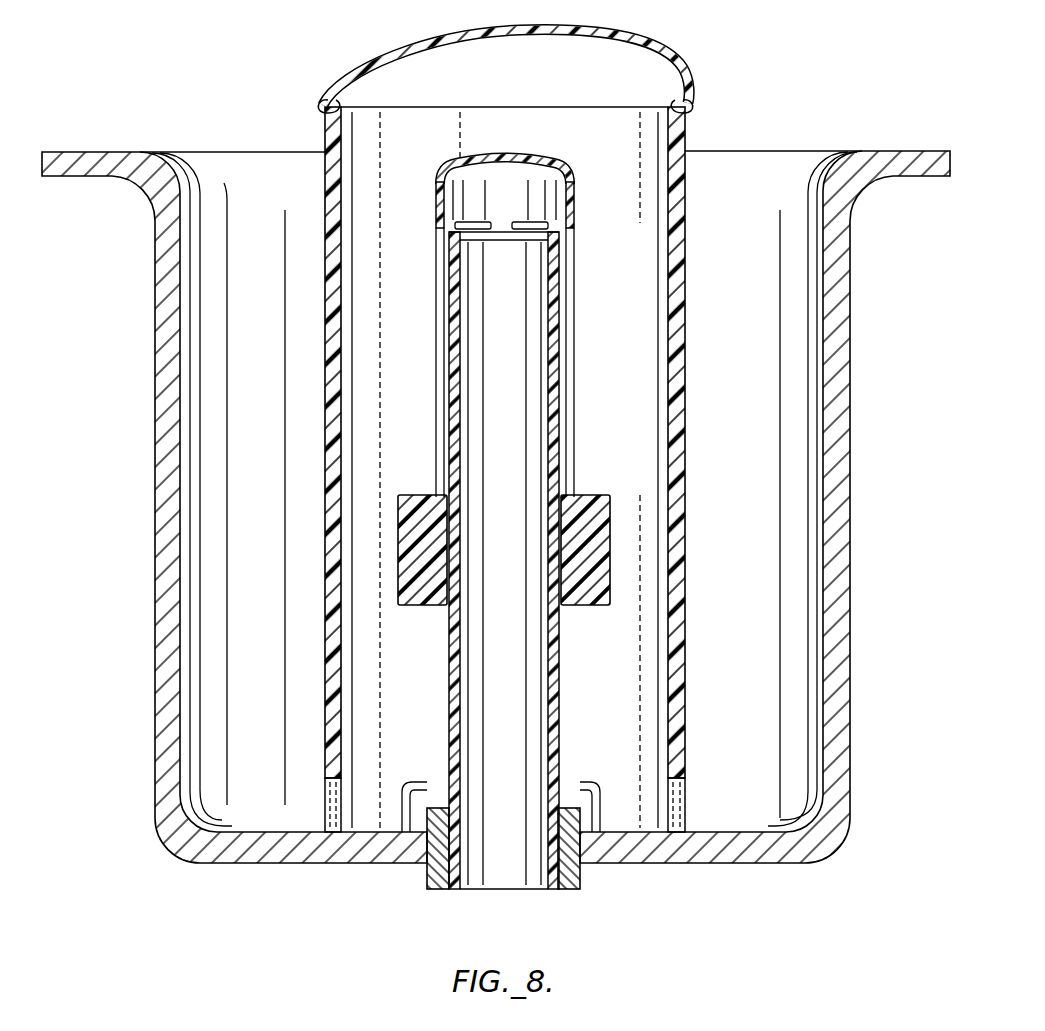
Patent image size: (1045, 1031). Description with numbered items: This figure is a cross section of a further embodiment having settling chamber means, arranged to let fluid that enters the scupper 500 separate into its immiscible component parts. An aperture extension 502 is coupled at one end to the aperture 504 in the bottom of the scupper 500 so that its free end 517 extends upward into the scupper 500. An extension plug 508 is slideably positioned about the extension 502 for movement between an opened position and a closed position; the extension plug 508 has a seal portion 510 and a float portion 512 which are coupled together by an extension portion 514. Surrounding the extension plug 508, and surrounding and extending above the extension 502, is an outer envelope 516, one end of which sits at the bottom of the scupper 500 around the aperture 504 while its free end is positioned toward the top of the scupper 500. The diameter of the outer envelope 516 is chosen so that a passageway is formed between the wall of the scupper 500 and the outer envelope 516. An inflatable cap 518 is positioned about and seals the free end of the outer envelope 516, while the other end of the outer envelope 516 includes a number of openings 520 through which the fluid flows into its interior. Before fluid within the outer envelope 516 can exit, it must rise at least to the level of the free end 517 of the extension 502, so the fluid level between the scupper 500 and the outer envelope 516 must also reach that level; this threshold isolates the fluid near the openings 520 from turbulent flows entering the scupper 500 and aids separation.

The scupper 500 is at (223, 170).
The aperture extension 502 is at (561, 669).
The aperture 504 is at (504, 902).
The extension plug 508 is at (582, 212).
The seal portion 510 is at (522, 167).
The float portion 512 is at (584, 494).
The extension portion 514 is at (577, 371).
The outer envelope 516 is at (687, 425).
The free end 517 is at (505, 233).
The inflatable cap 518 is at (627, 40).
The openings 520 is at (315, 805).